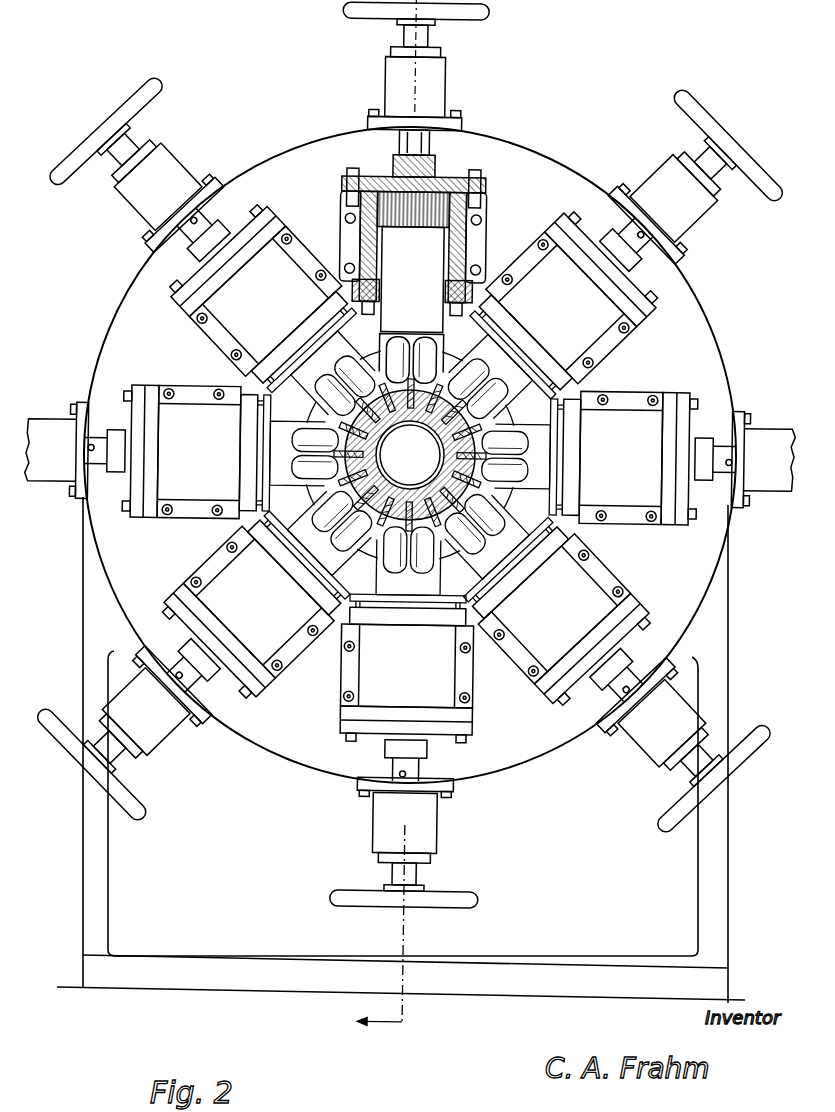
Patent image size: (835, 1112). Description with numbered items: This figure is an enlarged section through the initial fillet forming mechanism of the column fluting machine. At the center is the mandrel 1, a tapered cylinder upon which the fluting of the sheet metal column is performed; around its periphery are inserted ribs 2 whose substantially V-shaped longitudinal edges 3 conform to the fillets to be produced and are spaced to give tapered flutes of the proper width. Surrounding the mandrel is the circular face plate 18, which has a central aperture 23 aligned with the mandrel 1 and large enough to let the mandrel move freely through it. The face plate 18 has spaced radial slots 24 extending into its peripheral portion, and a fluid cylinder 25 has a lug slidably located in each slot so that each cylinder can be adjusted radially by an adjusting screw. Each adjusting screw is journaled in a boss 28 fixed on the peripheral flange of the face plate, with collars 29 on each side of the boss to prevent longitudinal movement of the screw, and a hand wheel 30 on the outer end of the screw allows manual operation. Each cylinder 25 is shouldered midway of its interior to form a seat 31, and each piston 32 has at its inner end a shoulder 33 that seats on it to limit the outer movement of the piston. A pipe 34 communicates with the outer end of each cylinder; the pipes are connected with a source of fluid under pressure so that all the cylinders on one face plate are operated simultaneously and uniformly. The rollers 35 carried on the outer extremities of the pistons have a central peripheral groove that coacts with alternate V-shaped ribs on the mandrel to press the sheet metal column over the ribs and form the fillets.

The mandrel 1 is at (410, 455).
The ribs 2 is at (373, 538).
The V-shaped longitudinal edges 3 is at (402, 761).
The face plate 18 is at (409, 454).
The central aperture 23 is at (529, 456).
The radial slots 24 is at (434, 143).
The fluid cylinder 25 is at (437, 247).
The boss 28 is at (432, 87).
The collars 29 is at (433, 41).
The hand wheel 30 is at (428, 15).
The seat 31 is at (445, 209).
The piston 32 is at (412, 280).
The shoulder 33 is at (399, 237).
The pipe 34 is at (400, 155).
The rollers 35 is at (499, 509).